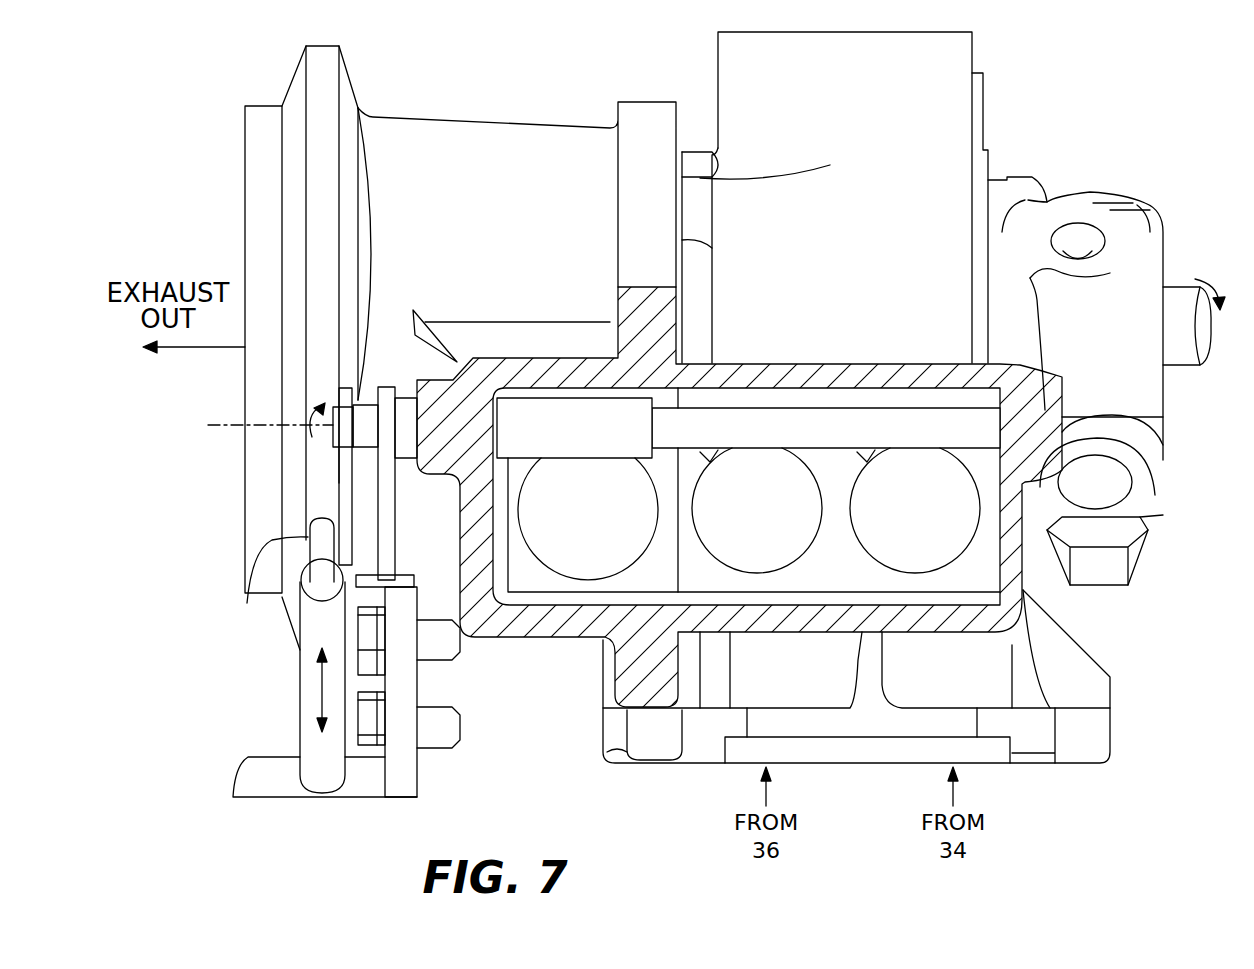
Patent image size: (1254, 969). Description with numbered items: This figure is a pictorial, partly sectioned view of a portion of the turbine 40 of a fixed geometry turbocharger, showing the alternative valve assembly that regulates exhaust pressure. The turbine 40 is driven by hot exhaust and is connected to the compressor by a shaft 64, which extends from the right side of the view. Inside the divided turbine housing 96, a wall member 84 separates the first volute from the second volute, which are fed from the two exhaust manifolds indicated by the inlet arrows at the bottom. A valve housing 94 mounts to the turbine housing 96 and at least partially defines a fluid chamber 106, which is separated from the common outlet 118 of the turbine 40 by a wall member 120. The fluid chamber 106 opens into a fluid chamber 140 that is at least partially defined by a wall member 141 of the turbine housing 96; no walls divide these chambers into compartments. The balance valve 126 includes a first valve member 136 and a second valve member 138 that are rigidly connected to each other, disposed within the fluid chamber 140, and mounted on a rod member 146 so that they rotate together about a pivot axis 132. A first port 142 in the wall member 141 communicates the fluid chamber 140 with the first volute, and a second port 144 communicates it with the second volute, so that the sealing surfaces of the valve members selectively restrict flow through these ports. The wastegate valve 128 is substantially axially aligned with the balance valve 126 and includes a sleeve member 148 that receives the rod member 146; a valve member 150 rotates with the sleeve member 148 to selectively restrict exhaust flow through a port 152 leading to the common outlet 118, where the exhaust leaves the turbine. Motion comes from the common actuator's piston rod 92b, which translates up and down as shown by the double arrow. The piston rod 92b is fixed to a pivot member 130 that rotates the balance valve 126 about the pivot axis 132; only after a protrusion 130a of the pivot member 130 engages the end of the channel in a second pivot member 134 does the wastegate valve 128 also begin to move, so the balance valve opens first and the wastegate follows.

The turbine 40 is at (1133, 690).
The shaft 64 is at (1188, 298).
The wall member 84 is at (872, 675).
The piston rod 92b is at (312, 688).
The valve housing 94 is at (530, 627).
The turbine housing 96 is at (710, 620).
The fluid chamber 106 is at (595, 612).
The common outlet 118 is at (245, 465).
The wall member 120 is at (552, 620).
The balance valve 126 is at (948, 590).
The wastegate valve 128 is at (503, 637).
The pivot member 130 is at (340, 488).
The protrusion 130a is at (247, 605).
The pivot axis 132 is at (228, 424).
The pivot member 134 is at (388, 398).
The first valve member 136 is at (896, 521).
The second valve member 138 is at (738, 521).
The fluid chamber 140 is at (897, 600).
The wall member 141 is at (990, 548).
The first port 142 is at (973, 537).
The second port 144 is at (821, 540).
The rod member 146 is at (381, 392).
The sleeve member 148 is at (558, 408).
The valve member 150 is at (568, 521).
The port 152 is at (656, 540).